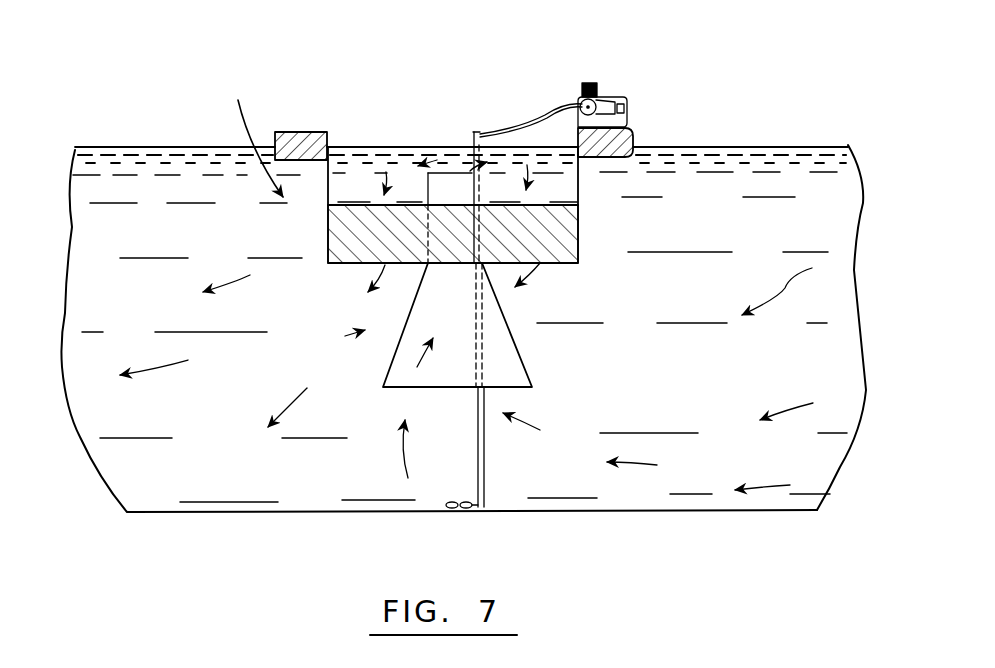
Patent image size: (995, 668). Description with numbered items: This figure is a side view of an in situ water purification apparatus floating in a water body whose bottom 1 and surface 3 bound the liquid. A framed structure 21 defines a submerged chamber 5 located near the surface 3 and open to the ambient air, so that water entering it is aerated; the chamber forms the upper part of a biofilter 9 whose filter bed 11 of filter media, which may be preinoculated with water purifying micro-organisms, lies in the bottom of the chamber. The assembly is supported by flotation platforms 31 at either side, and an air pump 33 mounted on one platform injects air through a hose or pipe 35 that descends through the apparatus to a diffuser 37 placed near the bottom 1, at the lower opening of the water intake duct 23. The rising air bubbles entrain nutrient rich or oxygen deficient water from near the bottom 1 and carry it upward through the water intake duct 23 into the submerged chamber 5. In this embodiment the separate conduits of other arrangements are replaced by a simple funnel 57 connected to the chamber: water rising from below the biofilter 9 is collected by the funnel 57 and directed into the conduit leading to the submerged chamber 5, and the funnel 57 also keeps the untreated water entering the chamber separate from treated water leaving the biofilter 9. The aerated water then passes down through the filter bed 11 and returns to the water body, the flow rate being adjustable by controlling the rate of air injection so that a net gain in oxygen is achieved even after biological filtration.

The bottom 1 is at (325, 485).
The surface 3 is at (700, 192).
The submerged chamber 5 is at (362, 187).
The biofilter 9 is at (579, 158).
The filter bed 11 is at (328, 237).
The framed structure 21 is at (252, 137).
The water intake duct 23 is at (350, 335).
The flotation platform 31 is at (300, 132).
The air pump 33 is at (607, 97).
The hose or pipe 35 is at (478, 131).
The diffuser 37 is at (457, 510).
The funnel 57 is at (507, 360).